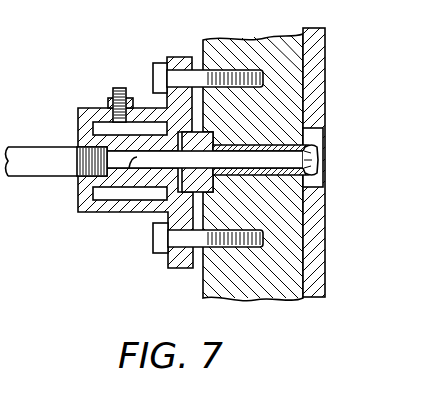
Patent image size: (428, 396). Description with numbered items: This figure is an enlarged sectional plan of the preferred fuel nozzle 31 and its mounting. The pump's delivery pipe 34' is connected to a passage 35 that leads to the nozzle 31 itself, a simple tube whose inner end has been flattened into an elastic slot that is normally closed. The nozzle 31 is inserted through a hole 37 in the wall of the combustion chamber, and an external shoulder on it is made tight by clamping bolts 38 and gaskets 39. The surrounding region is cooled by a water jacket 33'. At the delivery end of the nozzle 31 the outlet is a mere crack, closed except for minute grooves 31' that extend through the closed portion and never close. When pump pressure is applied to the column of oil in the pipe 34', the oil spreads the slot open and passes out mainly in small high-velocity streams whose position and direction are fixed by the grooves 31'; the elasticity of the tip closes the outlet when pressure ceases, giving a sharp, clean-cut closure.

The nozzle 31 is at (278, 167).
The grooves 31' is at (271, 161).
The hole 37 is at (323, 192).
The passage 35 is at (78, 202).
The water jacket 33' is at (197, 194).
The delivery pipe 34' is at (56, 147).
The clamping bolts 38 is at (153, 66).
The gaskets 39 is at (149, 211).